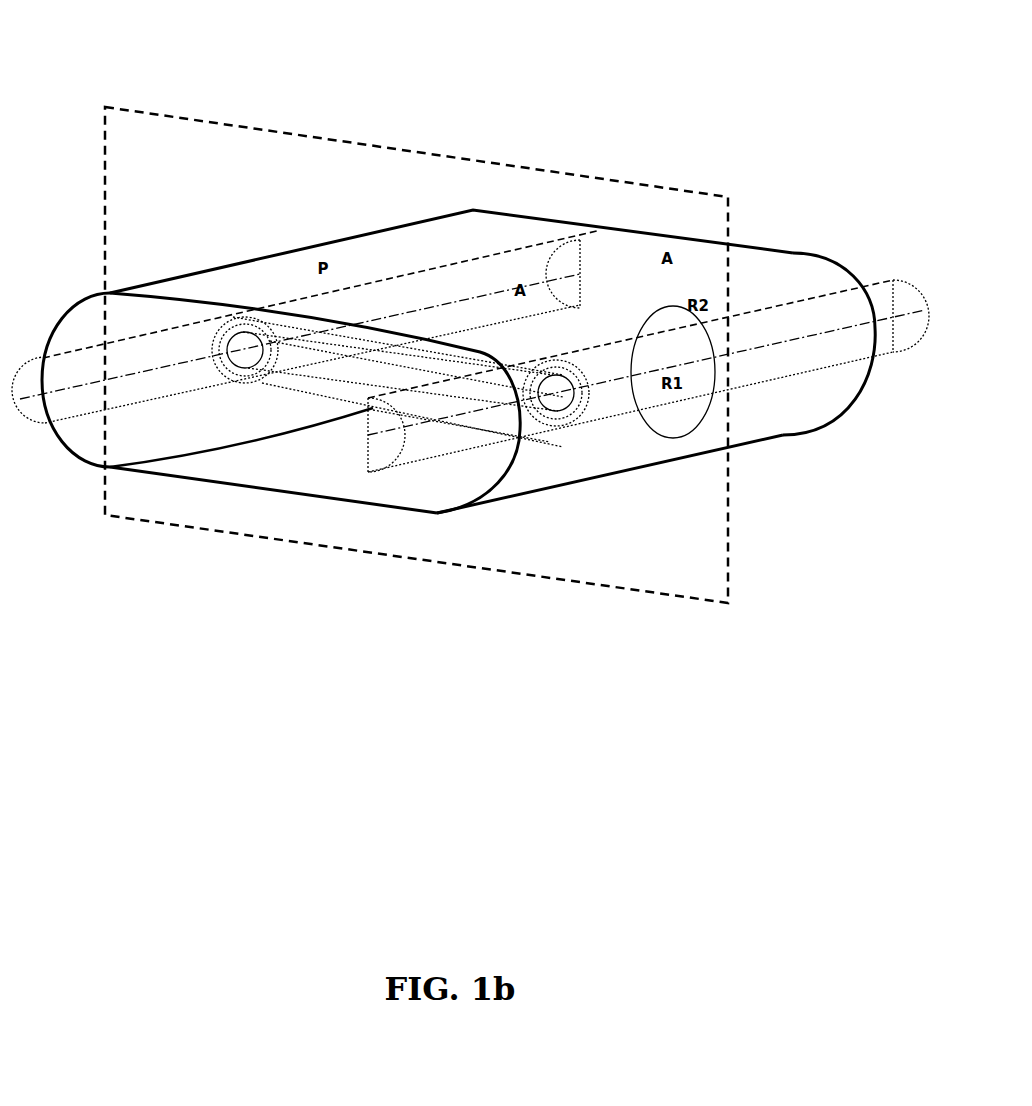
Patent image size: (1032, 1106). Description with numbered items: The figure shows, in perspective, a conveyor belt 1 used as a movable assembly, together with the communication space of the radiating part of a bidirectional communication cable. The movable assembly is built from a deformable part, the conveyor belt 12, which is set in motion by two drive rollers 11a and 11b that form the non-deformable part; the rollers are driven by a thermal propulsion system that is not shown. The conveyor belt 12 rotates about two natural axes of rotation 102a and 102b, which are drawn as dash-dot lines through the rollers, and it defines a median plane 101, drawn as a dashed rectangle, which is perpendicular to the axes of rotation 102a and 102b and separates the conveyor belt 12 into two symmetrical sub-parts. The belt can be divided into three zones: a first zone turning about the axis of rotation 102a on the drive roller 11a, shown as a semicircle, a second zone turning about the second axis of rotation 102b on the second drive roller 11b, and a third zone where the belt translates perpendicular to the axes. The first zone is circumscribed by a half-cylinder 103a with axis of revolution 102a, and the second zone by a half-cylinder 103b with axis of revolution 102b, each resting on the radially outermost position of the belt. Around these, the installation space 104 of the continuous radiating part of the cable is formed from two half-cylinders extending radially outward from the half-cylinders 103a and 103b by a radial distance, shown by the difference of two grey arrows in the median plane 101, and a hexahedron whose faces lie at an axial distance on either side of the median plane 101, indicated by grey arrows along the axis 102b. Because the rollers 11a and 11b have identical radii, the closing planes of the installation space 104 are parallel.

The conveyor belt (movable assembly) 1 is at (243, 562).
The drive roller 11a is at (240, 357).
The second drive roller 11b is at (548, 399).
The conveyor belt (deformable part) 12 is at (317, 395).
The median plane 101 is at (148, 165).
The axis of rotation 102a is at (549, 268).
The second axis of rotation 102b is at (832, 322).
The half-cylinder 103a is at (470, 255).
The half-cylinder 103b is at (780, 302).
The installation space 104 is at (547, 478).